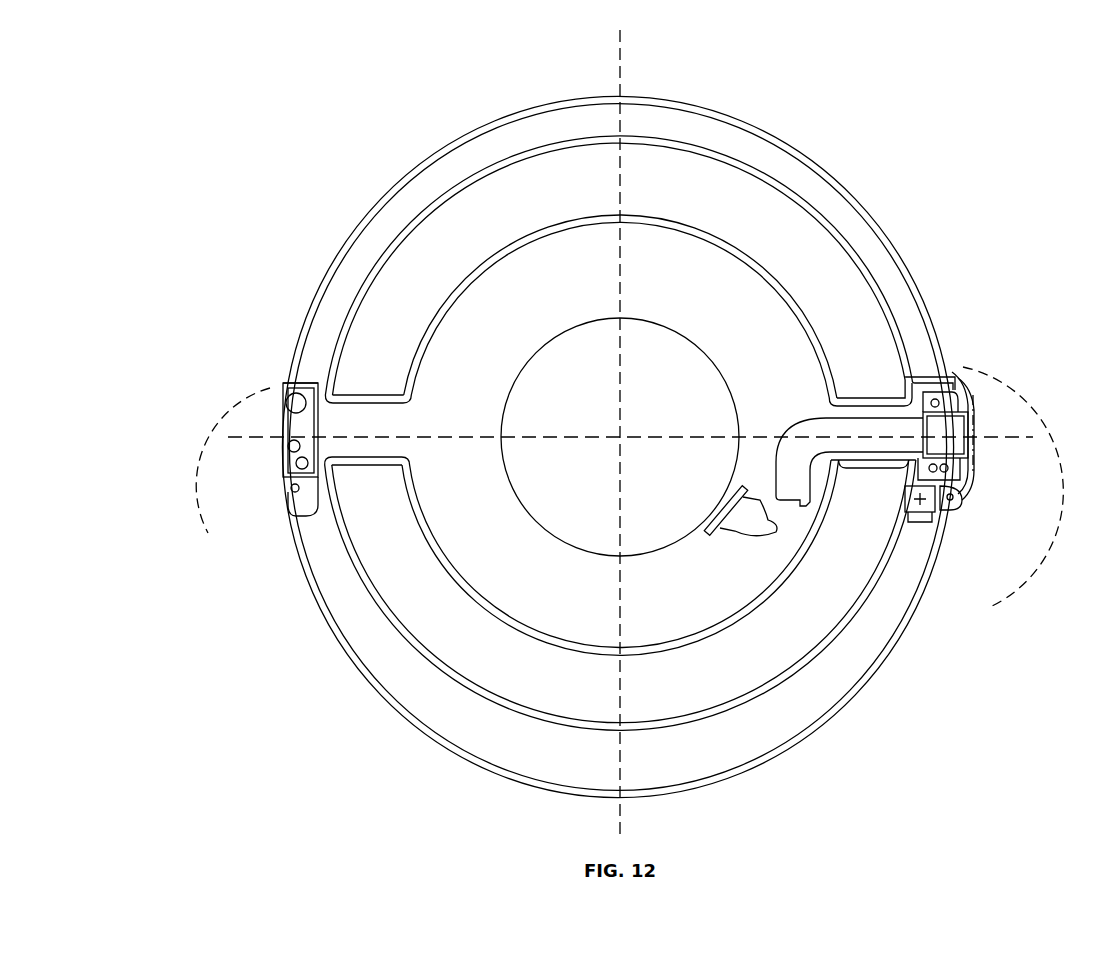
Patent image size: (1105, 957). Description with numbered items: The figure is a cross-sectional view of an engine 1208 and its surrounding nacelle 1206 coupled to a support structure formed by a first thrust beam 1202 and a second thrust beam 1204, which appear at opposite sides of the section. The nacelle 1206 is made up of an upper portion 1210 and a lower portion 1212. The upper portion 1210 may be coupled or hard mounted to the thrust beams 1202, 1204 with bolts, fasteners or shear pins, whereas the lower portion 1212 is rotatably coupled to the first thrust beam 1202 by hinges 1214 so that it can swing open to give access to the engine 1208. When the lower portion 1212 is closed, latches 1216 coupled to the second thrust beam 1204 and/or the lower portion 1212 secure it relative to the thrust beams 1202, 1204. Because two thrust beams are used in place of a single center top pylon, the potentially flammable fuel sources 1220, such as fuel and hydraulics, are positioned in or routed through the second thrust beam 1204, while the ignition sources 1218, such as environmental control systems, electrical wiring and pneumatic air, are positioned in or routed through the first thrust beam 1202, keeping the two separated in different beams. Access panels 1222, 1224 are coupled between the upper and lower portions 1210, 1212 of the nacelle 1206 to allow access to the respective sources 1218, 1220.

The first thrust beam 1202 is at (933, 392).
The second thrust beam 1204 is at (238, 439).
The nacelle 1206 is at (617, 435).
The engine 1208 is at (597, 409).
The upper portion 1210 is at (566, 104).
The lower portion 1212 is at (441, 740).
The hinges 1214 is at (942, 512).
The latches 1216 is at (289, 494).
The ignition sources 1218 is at (979, 431).
The fuel sources 1220 is at (281, 444).
The access panel 1222 is at (281, 390).
The access panel 1224 is at (975, 407).